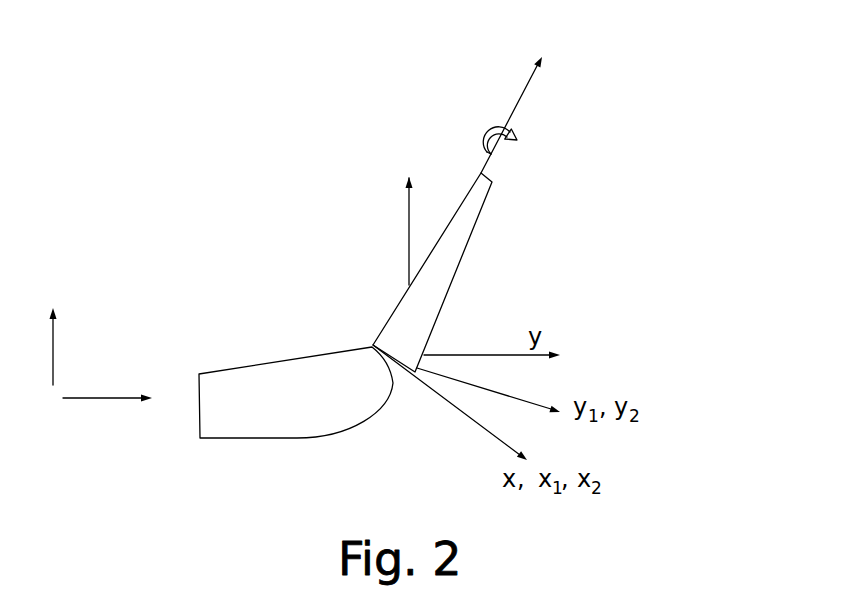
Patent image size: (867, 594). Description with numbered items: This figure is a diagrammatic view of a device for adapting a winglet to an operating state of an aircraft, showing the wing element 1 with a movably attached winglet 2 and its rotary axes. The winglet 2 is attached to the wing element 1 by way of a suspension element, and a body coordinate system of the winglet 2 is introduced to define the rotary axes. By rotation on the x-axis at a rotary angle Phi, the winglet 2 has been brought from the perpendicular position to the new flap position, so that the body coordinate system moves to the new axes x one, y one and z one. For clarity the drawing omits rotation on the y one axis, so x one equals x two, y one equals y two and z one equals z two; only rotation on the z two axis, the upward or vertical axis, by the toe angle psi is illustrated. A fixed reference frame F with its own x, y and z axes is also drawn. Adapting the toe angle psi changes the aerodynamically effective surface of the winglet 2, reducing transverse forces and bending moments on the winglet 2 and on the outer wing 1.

The wing element 1 is at (292, 342).
The winglet 2 is at (396, 217).
The toe angle psi is at (624, 117).
The fixed reference coordinate frame F is at (93, 372).